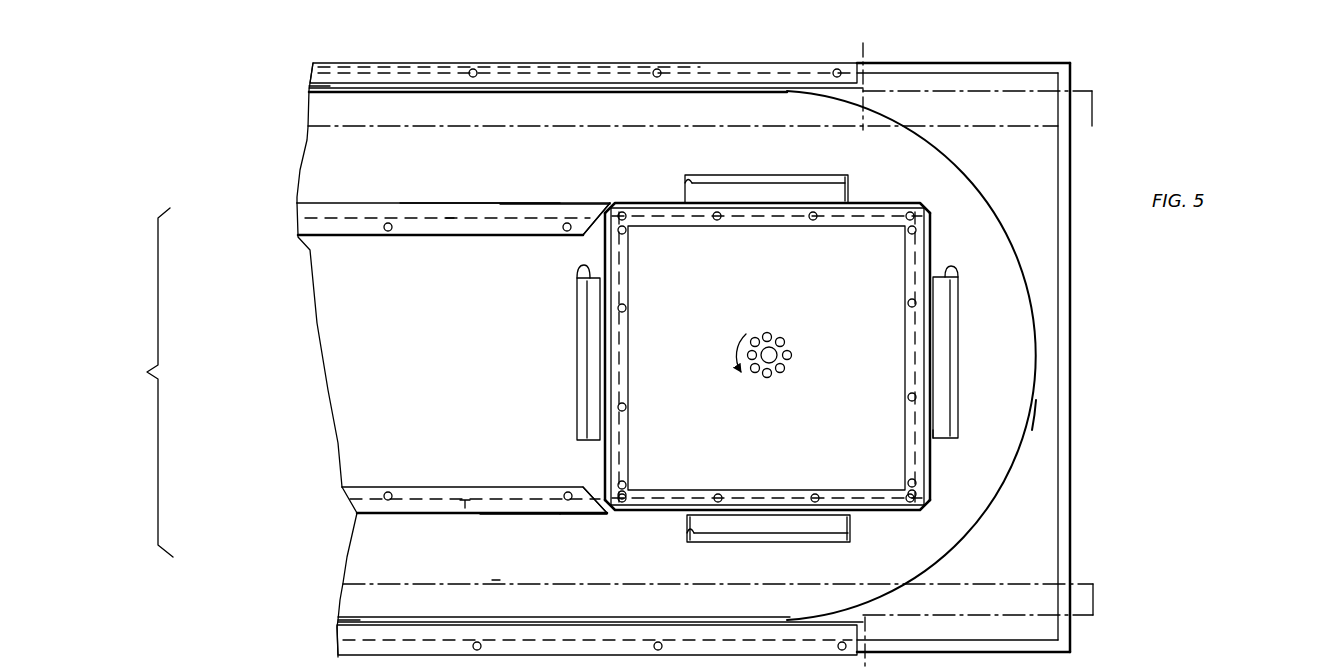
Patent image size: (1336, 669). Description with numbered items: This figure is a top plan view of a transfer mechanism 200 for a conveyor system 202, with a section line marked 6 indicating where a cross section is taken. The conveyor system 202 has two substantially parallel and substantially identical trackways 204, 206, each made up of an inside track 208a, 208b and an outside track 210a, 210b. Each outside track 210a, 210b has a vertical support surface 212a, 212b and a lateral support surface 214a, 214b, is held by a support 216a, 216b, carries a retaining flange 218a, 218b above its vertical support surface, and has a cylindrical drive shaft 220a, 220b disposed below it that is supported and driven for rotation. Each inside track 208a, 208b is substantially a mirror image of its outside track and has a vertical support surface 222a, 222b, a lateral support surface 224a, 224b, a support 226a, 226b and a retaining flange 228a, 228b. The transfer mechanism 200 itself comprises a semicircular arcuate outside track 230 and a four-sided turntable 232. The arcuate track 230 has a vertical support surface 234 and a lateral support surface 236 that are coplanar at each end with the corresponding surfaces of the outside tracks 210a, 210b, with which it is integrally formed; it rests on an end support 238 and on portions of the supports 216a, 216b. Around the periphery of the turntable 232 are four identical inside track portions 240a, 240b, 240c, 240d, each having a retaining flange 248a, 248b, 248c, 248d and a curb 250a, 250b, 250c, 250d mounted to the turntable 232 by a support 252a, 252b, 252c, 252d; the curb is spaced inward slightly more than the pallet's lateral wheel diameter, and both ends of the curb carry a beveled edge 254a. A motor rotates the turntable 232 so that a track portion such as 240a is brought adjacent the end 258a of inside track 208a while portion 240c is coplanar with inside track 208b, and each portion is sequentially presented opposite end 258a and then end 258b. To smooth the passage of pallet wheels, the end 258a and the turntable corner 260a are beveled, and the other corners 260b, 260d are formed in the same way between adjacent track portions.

The transfer mechanism 200 is at (1104, 344).
The conveyor system 202 is at (136, 382).
The trackway 204 is at (332, 556).
The trackway 206 is at (291, 168).
The inside track 208a is at (418, 515).
The inside track 208b is at (322, 201).
The outside track 210a is at (415, 624).
The outside track 210b is at (368, 94).
The vertical support surface 212a is at (605, 605).
The vertical support surface 212b is at (577, 93).
The lateral support surface 214a is at (458, 622).
The lateral support surface 214b is at (460, 89).
The support 216a is at (922, 640).
The support 216b is at (1050, 68).
The retaining flange 218a is at (595, 668).
The retaining flange 218b is at (598, 72).
The cylindrical drive shaft 220a is at (428, 585).
The cylindrical drive shaft 220b is at (305, 135).
The vertical support surface 222a is at (595, 510).
The vertical support surface 222b is at (514, 201).
The lateral support surface 224a is at (546, 512).
The lateral support surface 224b is at (482, 201).
The support 226a is at (496, 576).
The support 226b is at (450, 218).
The retaining flange 228a is at (392, 490).
The retaining flange 228b is at (308, 213).
The arcuate outside track 230 is at (1038, 377).
The turntable 232 is at (803, 306).
The vertical support surface 234 is at (1046, 441).
The lateral support surface 236 is at (1030, 427).
The end support 238 is at (1065, 530).
The inside track portion 240a is at (926, 521).
The inside track portion 240b is at (932, 458).
The inside track portion 240c is at (870, 200).
The inside track portion 240d is at (606, 466).
The retaining flange 248a is at (767, 468).
The retaining flange 248b is at (906, 299).
The retaining flange 248c is at (800, 207).
The retaining flange 248d is at (610, 383).
The curb 250a is at (815, 537).
The curb 250b is at (950, 330).
The curb 250c is at (797, 146).
The curb 250d is at (577, 347).
The support 252a is at (852, 514).
The support 252b is at (924, 500).
The support 252c is at (862, 165).
The support 252d is at (590, 272).
The beveled edge 254a is at (852, 528).
The end 258a is at (602, 520).
The end 258b is at (600, 196).
The corner 260a is at (946, 216).
The corner 260b is at (944, 512).
The corner 260d is at (626, 190).
The section line 6 is at (863, 45).